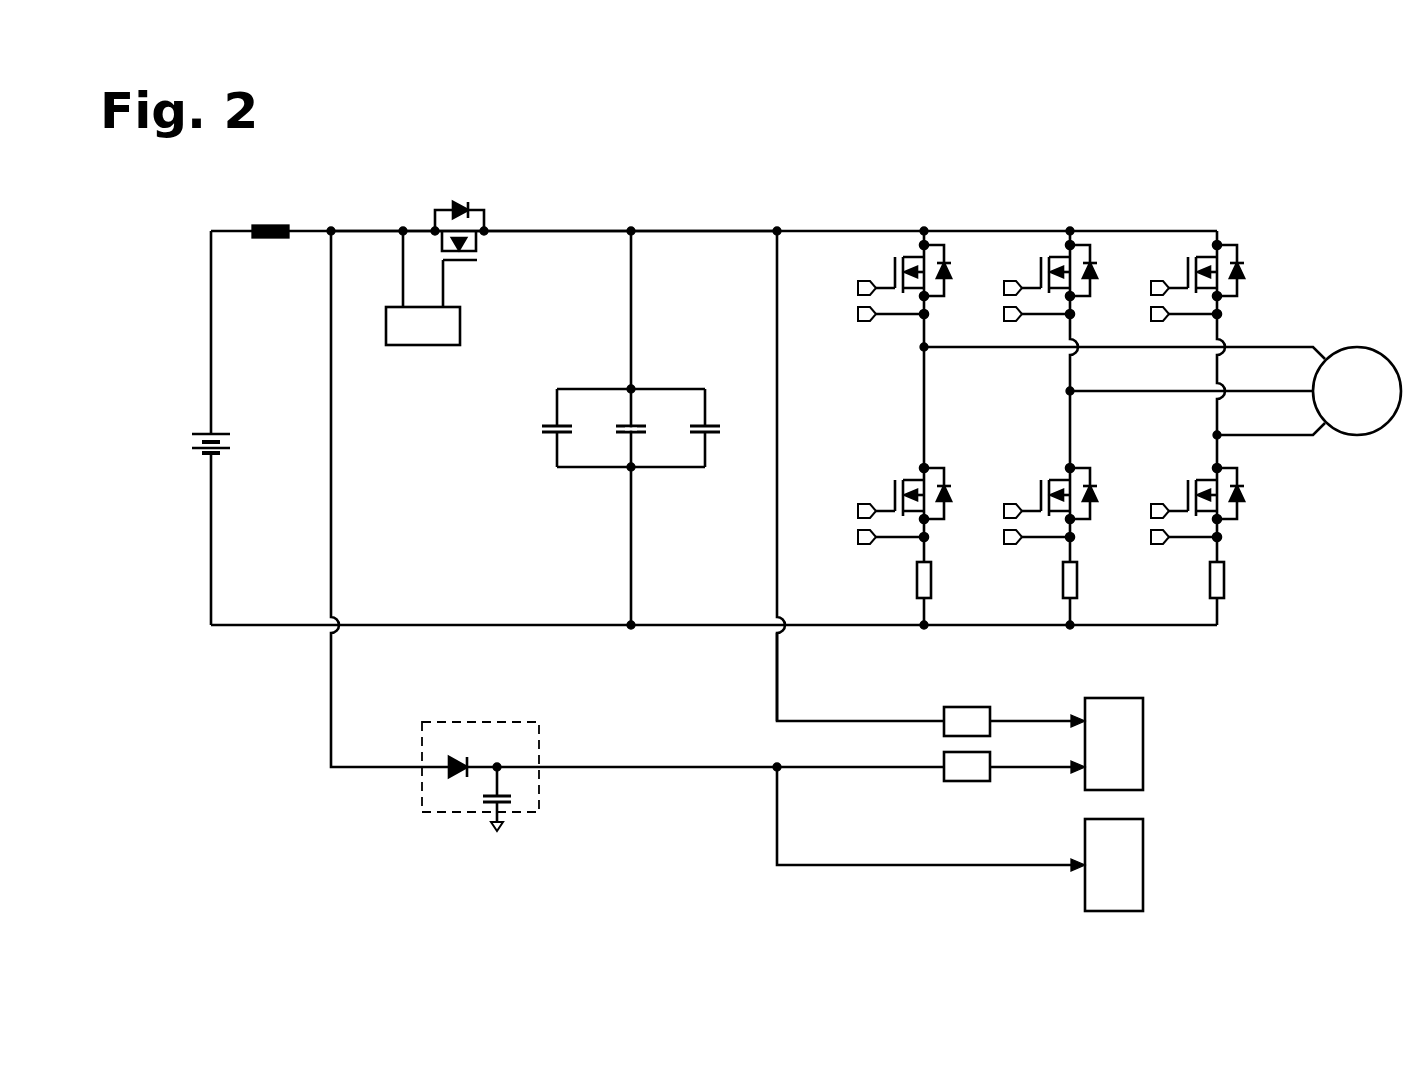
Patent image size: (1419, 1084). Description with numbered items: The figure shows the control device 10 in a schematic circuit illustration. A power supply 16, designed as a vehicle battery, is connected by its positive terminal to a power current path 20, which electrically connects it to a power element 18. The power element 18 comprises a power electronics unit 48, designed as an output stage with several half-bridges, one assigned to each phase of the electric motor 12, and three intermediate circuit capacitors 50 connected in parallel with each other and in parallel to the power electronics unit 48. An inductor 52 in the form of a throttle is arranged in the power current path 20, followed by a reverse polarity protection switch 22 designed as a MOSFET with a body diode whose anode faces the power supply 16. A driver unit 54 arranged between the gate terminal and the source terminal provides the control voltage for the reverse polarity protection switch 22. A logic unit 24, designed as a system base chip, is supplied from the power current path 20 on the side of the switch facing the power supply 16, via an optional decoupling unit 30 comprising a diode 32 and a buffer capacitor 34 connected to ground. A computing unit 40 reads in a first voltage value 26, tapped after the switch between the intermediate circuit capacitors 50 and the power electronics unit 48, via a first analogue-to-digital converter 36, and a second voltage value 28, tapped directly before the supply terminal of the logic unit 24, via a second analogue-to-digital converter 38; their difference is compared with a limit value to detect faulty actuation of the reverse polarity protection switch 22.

The control device 10 is at (1051, 355).
The electric motor 12 is at (1347, 338).
The power supply 16 is at (192, 462).
The power element 18 is at (805, 208).
The power current path 20 is at (548, 220).
The reverse polarity protection switch 22 is at (462, 200).
The logic unit 24 is at (1165, 860).
The first voltage value 26 is at (777, 575).
The second voltage value 28 is at (333, 575).
The decoupling unit 30 is at (503, 784).
The diode 32 is at (440, 775).
The capacitor 34 is at (488, 810).
The first analogue-to-digital converter 36 is at (950, 697).
The second analogue-to-digital converter 38 is at (945, 790).
The computing unit 40 is at (1165, 740).
The power electronics unit 48 is at (1002, 220).
The intermediate circuit capacitor 50 is at (548, 470).
The inductor 52 is at (278, 208).
The driver unit 54 is at (443, 370).